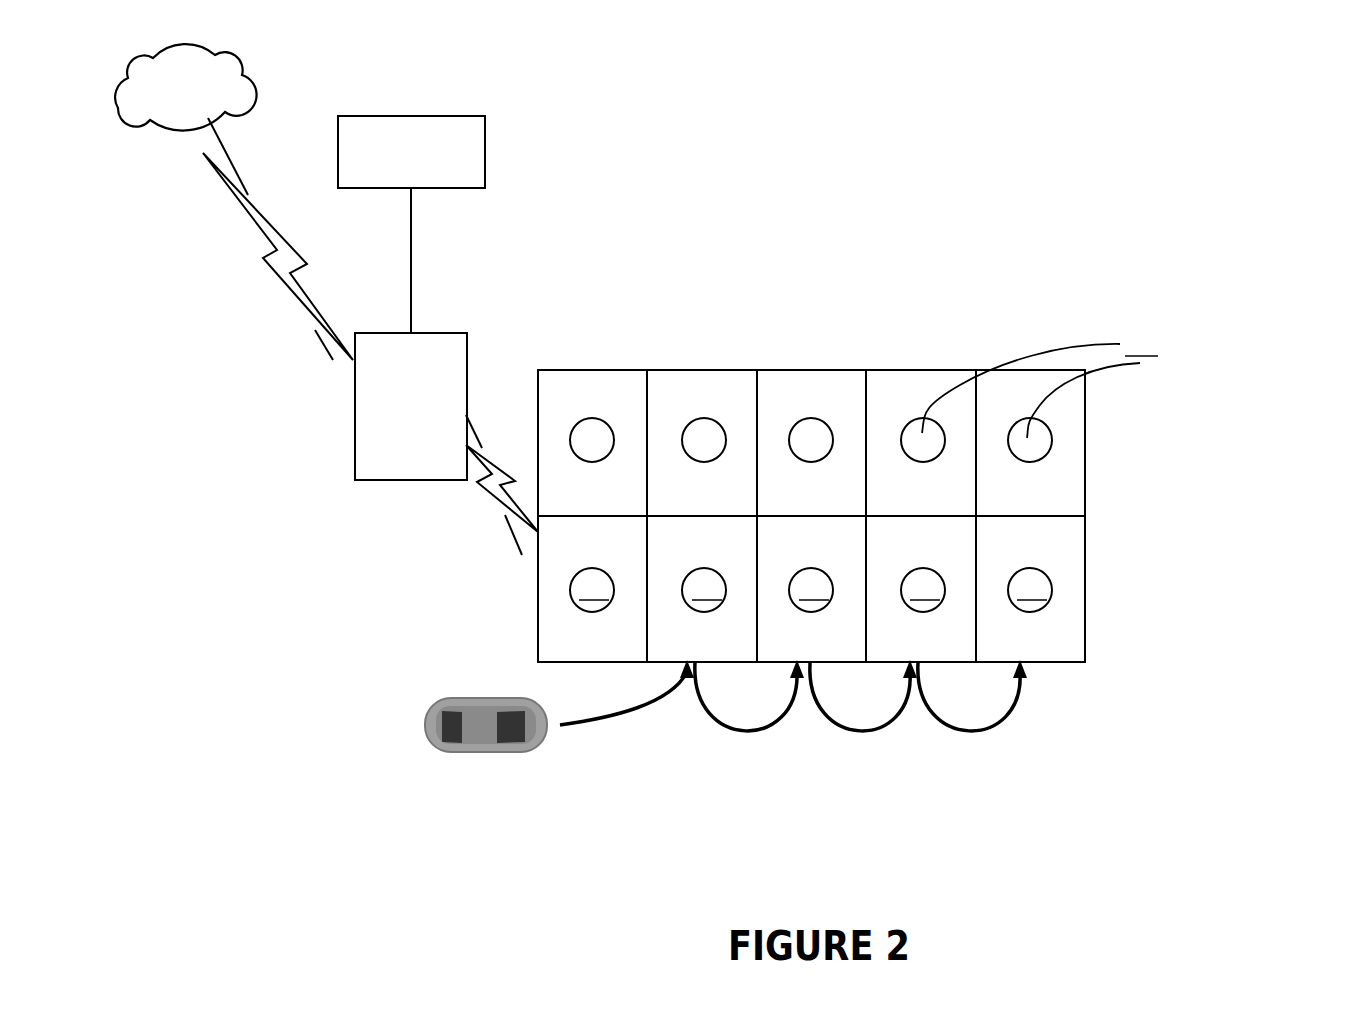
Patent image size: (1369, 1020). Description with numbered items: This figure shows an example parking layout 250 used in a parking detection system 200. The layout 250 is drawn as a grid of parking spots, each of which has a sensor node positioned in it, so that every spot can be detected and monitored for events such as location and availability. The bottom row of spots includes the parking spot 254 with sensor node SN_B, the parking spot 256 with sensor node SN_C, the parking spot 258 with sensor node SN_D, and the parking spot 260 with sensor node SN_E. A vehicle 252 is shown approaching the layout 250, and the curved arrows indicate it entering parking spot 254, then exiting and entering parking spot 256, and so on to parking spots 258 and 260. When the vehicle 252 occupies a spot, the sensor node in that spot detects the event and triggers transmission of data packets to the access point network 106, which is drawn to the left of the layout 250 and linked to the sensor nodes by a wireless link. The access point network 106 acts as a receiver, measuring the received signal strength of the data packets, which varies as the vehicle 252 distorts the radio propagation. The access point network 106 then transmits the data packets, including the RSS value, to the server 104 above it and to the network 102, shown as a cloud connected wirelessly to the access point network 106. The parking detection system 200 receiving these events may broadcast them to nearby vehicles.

The parking detection system 200 is at (1228, 136).
The network 102 is at (212, 115).
The server 104 is at (429, 177).
The access point network 106 is at (428, 455).
The parking layout 250 is at (900, 370).
The vehicle 252 is at (473, 753).
The parking spot 254 is at (730, 647).
The parking spot 256 is at (829, 647).
The parking spot 258 is at (931, 647).
The parking spot 260 is at (1040, 647).